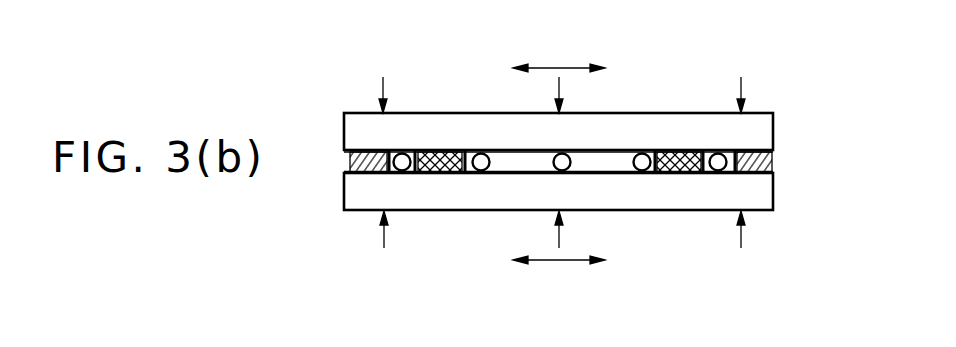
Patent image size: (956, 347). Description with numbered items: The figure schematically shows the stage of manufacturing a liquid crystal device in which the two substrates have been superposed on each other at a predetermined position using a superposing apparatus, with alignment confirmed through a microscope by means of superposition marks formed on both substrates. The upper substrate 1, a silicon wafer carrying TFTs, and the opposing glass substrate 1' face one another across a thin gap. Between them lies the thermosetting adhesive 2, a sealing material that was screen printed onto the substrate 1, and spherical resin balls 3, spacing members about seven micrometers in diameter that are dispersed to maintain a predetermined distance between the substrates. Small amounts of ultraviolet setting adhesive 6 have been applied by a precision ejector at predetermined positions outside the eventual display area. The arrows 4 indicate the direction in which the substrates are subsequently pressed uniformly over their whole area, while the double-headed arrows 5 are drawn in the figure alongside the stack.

The substrate 1 is at (757, 134).
The substrate 1' is at (587, 191).
The ultraviolet setting adhesive 6 is at (773, 162).
The thermosetting adhesive 2 is at (443, 172).
The spherical resin balls 3 is at (486, 172).
The arrow 4 is at (383, 82).
The shear displacement arrows 5 is at (565, 68).